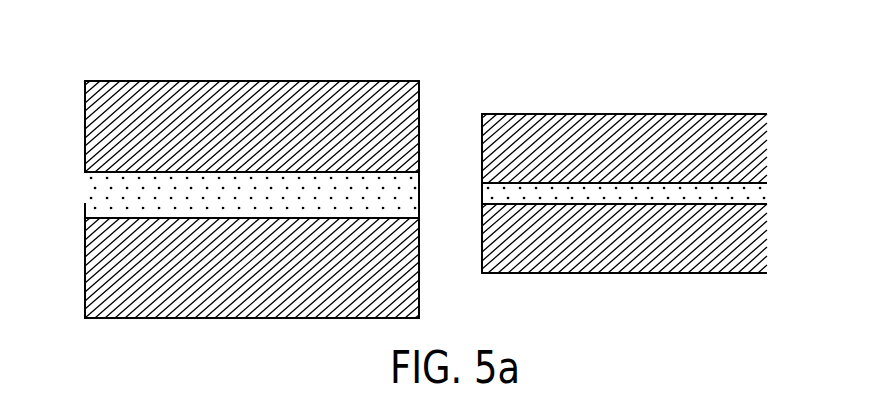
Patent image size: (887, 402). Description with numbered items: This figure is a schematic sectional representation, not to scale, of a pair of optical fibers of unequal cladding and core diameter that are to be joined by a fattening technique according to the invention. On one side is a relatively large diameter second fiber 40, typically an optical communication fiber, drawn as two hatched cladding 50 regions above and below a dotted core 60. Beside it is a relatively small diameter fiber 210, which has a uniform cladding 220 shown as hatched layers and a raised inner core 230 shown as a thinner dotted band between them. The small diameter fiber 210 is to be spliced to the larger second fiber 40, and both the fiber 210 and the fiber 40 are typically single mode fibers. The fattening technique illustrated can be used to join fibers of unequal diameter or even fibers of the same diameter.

The second fiber 40 is at (226, 167).
The cladding 50 is at (102, 122).
The core 60 is at (87, 195).
The small diameter fiber 210 is at (668, 164).
The uniform cladding 220 is at (767, 123).
The raised inner core 230 is at (767, 192).